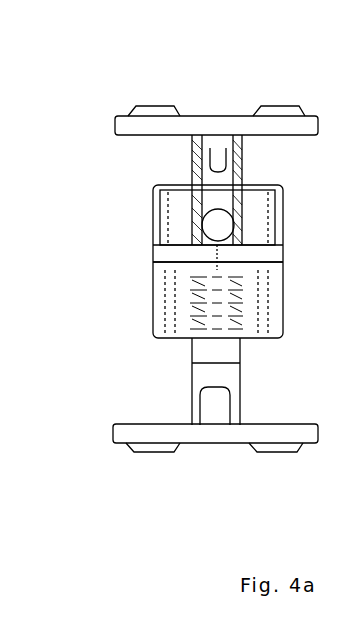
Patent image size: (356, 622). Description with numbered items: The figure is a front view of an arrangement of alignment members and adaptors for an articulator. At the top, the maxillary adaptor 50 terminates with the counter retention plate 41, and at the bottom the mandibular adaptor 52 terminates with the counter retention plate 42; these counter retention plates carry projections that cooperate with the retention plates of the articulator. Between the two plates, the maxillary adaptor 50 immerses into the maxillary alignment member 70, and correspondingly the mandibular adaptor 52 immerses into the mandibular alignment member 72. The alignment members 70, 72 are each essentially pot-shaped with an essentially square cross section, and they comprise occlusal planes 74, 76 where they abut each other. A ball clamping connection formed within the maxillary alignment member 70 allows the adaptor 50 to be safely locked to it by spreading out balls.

The counter retention plate 41 is at (233, 120).
The counter retention plate 42 is at (188, 432).
The maxillary adaptor 50 is at (192, 165).
The mandibular adaptor 52 is at (200, 400).
The maxillary alignment member 70 is at (164, 231).
The mandibular alignment member 72 is at (155, 318).
The occlusal plane 74 is at (169, 273).
The occlusal plane 76 is at (258, 261).